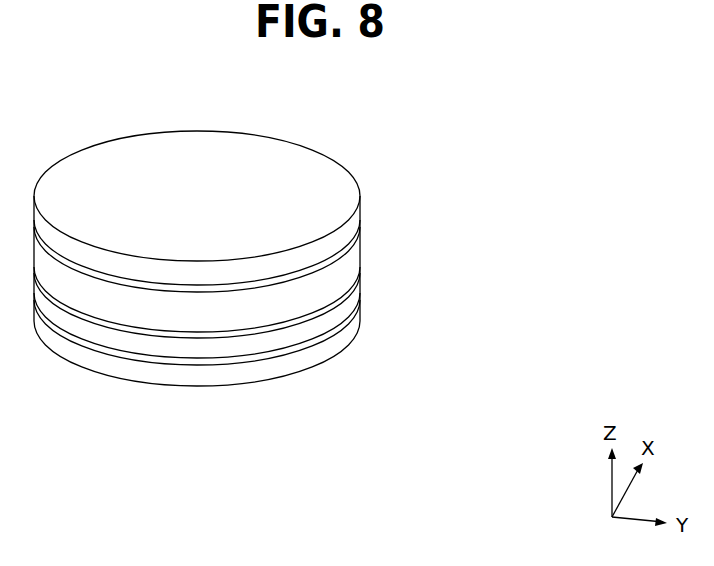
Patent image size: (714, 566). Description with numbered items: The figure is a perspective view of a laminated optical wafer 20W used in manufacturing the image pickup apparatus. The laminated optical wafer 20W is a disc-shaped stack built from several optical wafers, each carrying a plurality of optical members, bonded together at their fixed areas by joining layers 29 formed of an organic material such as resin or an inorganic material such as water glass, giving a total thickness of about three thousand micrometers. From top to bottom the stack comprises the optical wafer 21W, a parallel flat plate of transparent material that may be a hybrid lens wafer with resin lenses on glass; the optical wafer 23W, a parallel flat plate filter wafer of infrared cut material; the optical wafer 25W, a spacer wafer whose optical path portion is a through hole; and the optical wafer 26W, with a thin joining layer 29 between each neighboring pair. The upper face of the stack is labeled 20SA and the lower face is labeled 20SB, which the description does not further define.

The laminated optical wafer 20W is at (318, 287).
The top surface 20SA is at (305, 190).
The bottom surface 20SB is at (304, 373).
The optical wafer 21W is at (360, 210).
The joining layer 29 is at (360, 230).
The optical wafer 23W is at (360, 257).
The optical wafer 25W is at (360, 297).
The optical wafer 26W is at (281, 390).